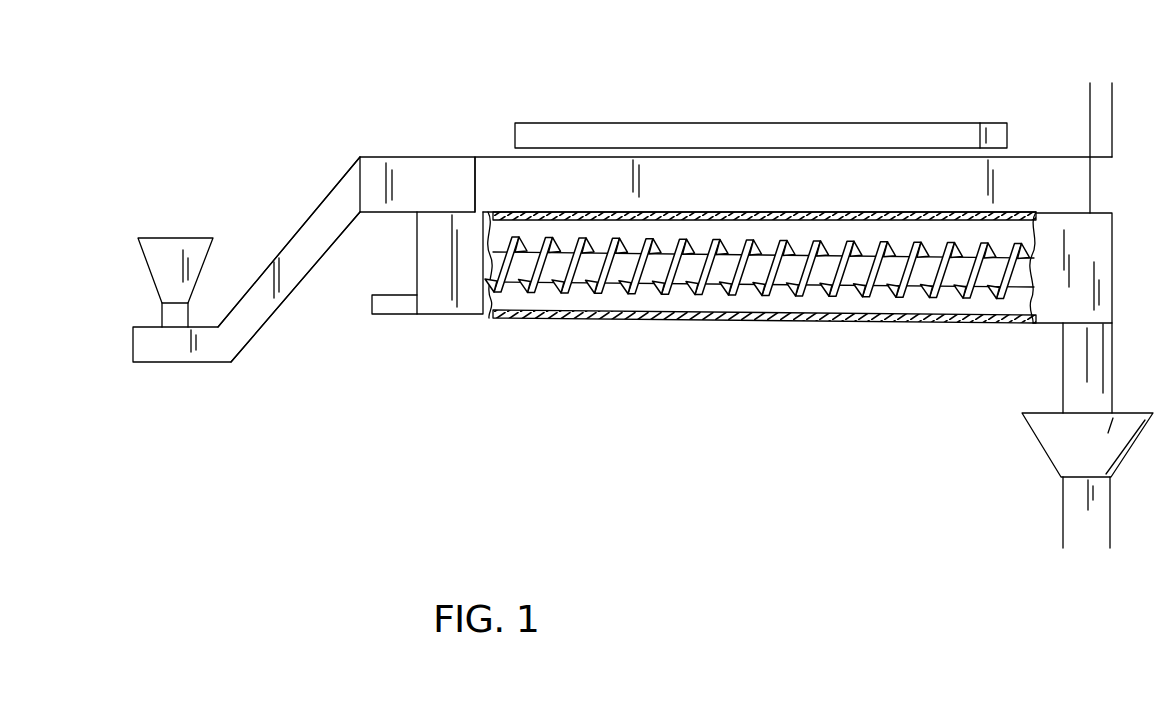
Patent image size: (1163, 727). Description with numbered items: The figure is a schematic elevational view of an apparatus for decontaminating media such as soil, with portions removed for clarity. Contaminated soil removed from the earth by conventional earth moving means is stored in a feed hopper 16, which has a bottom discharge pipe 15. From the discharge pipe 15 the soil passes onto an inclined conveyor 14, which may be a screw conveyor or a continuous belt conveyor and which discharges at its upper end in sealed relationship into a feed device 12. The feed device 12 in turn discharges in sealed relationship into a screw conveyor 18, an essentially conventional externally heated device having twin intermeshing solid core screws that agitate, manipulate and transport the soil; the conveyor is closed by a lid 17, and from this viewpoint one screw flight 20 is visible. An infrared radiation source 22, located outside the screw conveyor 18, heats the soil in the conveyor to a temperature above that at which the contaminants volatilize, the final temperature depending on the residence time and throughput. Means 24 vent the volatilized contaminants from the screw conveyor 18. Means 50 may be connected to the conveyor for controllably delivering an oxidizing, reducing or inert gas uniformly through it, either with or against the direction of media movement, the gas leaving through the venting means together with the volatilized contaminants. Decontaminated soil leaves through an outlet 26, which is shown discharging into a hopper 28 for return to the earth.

The feed device 12 is at (399, 172).
The inclined conveyor 14 is at (302, 240).
The bottom discharge pipe 15 is at (170, 320).
The feed hopper 16 is at (170, 250).
The lid 17 is at (493, 168).
The screw conveyor 18 is at (1042, 214).
The screw flight 20 is at (655, 268).
The infrared radiation source 22 is at (612, 131).
The means for venting 24 is at (1096, 148).
The outlet 26 is at (1083, 367).
The hopper 28 is at (1078, 448).
The means for controllably delivering a gas 50 is at (391, 305).